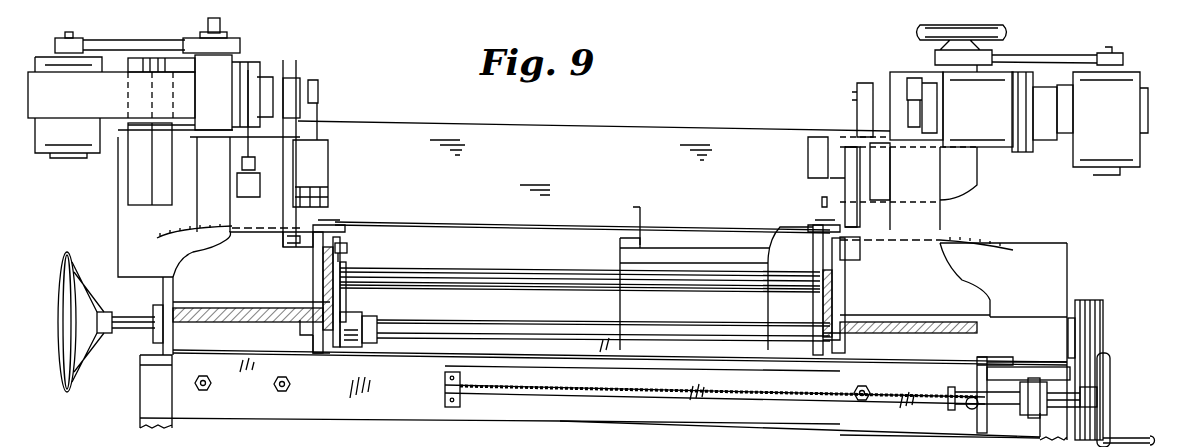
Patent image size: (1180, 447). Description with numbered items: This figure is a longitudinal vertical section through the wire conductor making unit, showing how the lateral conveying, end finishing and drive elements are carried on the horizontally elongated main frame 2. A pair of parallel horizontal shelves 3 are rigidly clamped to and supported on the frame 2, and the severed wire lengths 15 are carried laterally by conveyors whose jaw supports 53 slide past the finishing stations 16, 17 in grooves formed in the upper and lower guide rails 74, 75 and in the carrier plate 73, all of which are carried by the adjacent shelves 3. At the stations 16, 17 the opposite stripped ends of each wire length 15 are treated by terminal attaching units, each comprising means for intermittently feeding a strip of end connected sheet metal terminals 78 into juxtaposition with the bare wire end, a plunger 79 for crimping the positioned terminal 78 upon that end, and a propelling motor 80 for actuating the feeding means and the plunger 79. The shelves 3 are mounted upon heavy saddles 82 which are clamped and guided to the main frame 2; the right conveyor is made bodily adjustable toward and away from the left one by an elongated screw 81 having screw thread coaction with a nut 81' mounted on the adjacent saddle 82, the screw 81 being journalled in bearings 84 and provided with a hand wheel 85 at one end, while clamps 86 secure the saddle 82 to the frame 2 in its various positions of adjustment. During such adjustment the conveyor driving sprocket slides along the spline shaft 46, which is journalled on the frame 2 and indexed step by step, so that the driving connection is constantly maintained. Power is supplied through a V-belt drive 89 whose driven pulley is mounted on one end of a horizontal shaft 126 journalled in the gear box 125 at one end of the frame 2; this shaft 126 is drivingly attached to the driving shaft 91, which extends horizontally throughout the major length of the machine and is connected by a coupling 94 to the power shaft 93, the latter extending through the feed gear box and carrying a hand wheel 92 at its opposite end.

The main frame 2 is at (660, 137).
The shelves 3 is at (232, 318).
The wire lengths 15 is at (492, 207).
The station 16 is at (322, 218).
The station 17 is at (828, 224).
The spline shaft 46 is at (543, 258).
The supports 53 is at (342, 250).
The carrier plate 73 is at (325, 283).
The upper guide rail 74 is at (320, 240).
The lower guide rail 75 is at (327, 353).
The terminals 78 is at (160, 240).
The plunger 79 is at (313, 163).
The propelling motor 80 is at (60, 150).
The screw 81 is at (715, 405).
The nut 81' is at (1026, 361).
The saddle 82 is at (977, 342).
The bearings 84 is at (452, 400).
The hand wheel 85 is at (1107, 412).
The clamps 86 is at (973, 407).
The V-belt drive 89 is at (1097, 300).
The driving shaft 91 is at (548, 311).
The hand wheel 92 is at (76, 356).
The power shaft 93 is at (137, 310).
The coupling 94 is at (378, 300).
The gear box 125 is at (1047, 267).
The horizontal shaft 126 is at (1075, 335).